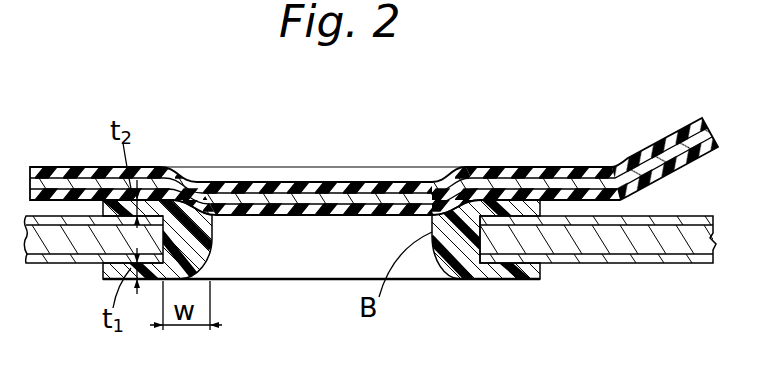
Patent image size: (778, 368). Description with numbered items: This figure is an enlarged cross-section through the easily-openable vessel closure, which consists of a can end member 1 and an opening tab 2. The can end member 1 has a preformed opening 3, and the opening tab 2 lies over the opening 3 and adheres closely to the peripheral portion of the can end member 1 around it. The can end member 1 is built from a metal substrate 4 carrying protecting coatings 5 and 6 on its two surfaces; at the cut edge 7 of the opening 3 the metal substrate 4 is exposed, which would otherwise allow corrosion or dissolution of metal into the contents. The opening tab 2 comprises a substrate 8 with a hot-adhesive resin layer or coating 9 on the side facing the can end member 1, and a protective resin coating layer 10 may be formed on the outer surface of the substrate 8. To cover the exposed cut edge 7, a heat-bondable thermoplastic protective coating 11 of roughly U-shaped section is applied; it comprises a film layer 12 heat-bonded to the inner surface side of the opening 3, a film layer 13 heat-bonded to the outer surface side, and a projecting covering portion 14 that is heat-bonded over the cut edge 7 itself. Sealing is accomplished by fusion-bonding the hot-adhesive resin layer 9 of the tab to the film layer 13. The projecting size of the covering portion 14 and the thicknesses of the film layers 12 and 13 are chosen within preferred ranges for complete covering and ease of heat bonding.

The can end member 1 is at (370, 287).
The opening tab 2 is at (371, 138).
The preformed opening 3 is at (374, 159).
The metal substrate 4 is at (640, 243).
The protecting coating 5 is at (587, 317).
The protecting coating 6 is at (603, 218).
The cut edge 7 is at (196, 248).
The substrate 8 is at (454, 190).
The hot-adhesive resin layer 9 is at (428, 186).
The protective resin coating layer 10 is at (407, 117).
The protective coating 11 is at (477, 278).
The film layer 12 is at (508, 289).
The film layer 13 is at (459, 280).
The projecting covering portion 14 is at (457, 234).